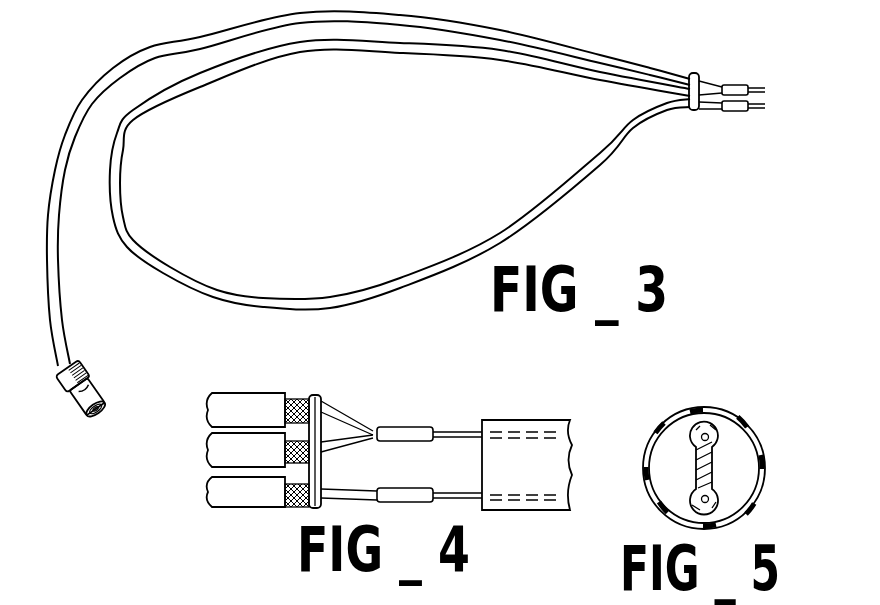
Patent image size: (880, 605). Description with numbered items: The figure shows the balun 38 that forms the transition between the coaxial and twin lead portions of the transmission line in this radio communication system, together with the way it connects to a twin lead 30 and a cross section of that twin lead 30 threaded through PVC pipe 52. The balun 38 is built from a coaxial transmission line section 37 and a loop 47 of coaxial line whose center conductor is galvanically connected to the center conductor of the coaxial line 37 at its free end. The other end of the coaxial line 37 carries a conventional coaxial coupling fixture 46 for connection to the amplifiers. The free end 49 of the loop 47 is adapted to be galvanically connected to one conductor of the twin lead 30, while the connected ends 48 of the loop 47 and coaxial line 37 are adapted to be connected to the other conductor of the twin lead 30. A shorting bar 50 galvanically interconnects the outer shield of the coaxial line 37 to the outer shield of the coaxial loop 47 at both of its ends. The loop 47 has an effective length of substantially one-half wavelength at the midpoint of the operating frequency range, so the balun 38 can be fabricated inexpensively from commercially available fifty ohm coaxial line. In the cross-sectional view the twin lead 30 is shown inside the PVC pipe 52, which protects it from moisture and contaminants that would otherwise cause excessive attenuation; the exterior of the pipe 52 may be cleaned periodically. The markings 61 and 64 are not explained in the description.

In FIG. 4, the twin lead transmission line 30 is at (536, 418).
In FIG. 5, the twin lead transmission line 30 is at (718, 447).
In FIG. 3, the coaxial transmission line section 37 is at (115, 67).
In FIG. 4, the coaxial transmission line section 37 is at (250, 392).
In FIG. 3, the balun 38 is at (608, 170).
In FIG. 4, the balun 38 is at (223, 523).
In FIG. 3, the coaxial coupling fixture 46 is at (93, 383).
In FIG. 3, the loop 47 is at (120, 160).
In FIG. 4, the loop 47 is at (205, 493).
In FIG. 3, the connected ends 48 is at (712, 82).
In FIG. 4, the connected ends 48 is at (380, 405).
In FIG. 3, the free end 49 is at (763, 113).
In FIG. 4, the free end 49 is at (372, 489).
In FIG. 3, the shorting bar 50 is at (697, 113).
In FIG. 4, the shorting bar 50 is at (315, 397).
In FIG. 5, the PVC pipe 52 is at (665, 420).
In FIG. 4, the element 61 is at (291, 592).
In FIG. 4, the element 64 is at (379, 598).